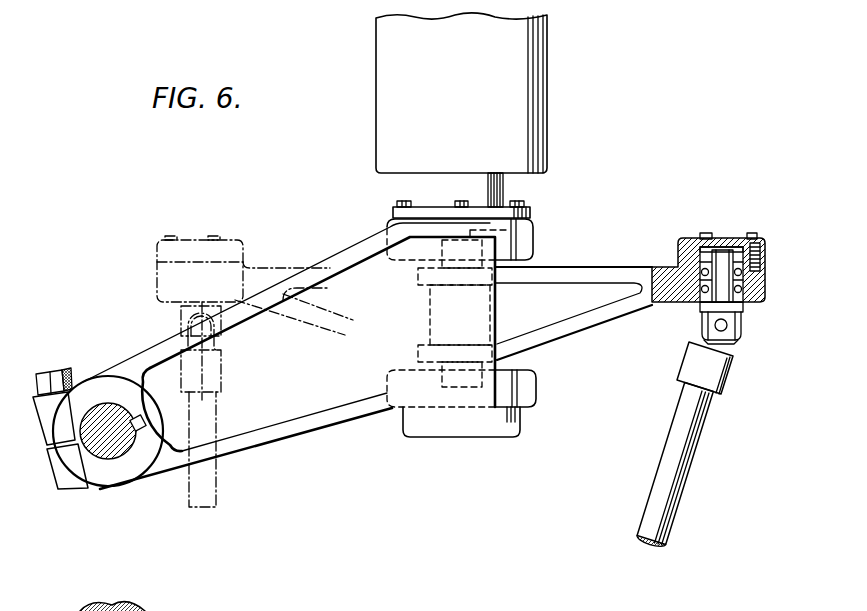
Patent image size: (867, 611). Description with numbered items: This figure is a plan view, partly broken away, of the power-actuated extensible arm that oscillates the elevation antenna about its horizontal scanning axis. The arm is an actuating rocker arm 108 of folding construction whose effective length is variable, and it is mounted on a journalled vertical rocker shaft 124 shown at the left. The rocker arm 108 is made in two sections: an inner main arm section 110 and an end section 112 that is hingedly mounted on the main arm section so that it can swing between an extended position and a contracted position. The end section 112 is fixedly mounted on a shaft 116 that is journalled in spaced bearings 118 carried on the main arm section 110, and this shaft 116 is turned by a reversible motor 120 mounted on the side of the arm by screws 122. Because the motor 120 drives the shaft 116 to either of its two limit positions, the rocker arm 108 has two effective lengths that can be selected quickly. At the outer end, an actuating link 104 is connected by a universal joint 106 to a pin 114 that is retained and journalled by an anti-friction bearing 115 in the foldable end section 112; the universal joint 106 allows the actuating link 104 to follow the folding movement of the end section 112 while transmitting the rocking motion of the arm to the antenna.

The actuating link 104 is at (680, 467).
The universal joint 106 is at (743, 325).
The actuating rocker arm 108 is at (358, 418).
The main arm section 110 is at (272, 432).
The end section 112 is at (623, 270).
The pin 114 is at (721, 270).
The anti-friction bearing 115 is at (752, 287).
The shaft 116 is at (507, 230).
The bearings 118 is at (525, 246).
The reversible motor 120 is at (522, 97).
The screws 122 is at (455, 201).
The vertical rocker shaft 124 is at (103, 408).